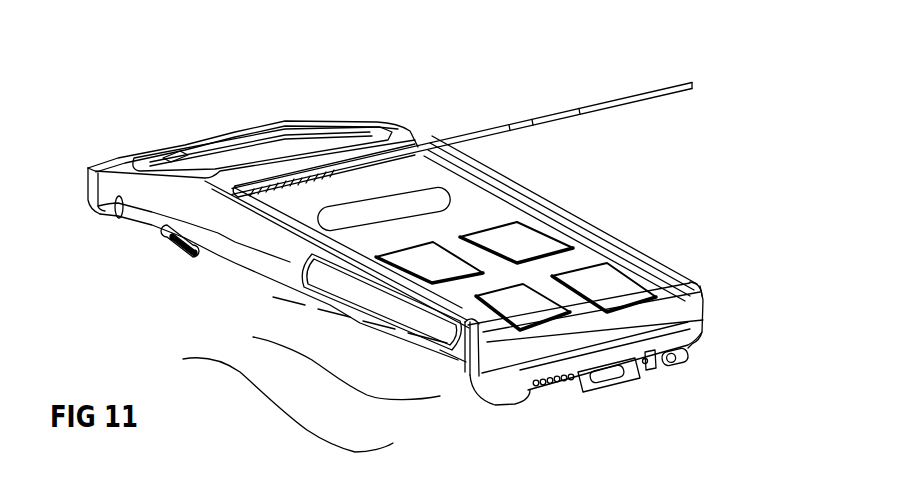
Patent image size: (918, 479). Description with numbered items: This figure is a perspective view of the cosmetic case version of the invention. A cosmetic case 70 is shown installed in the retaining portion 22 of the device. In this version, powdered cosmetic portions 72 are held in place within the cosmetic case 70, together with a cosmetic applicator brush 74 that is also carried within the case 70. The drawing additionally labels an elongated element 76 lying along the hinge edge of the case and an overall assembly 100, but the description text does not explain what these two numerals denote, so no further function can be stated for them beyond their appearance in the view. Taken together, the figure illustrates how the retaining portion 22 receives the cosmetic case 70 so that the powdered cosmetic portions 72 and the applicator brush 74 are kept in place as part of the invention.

The retaining portion 22 is at (258, 220).
The cosmetic case 70 is at (655, 330).
The powdered cosmetic portions 72 is at (603, 288).
The cosmetic applicator brush 74 is at (427, 203).
The hinge pin 76 is at (543, 114).
The protective case assembly 100 is at (65, 204).